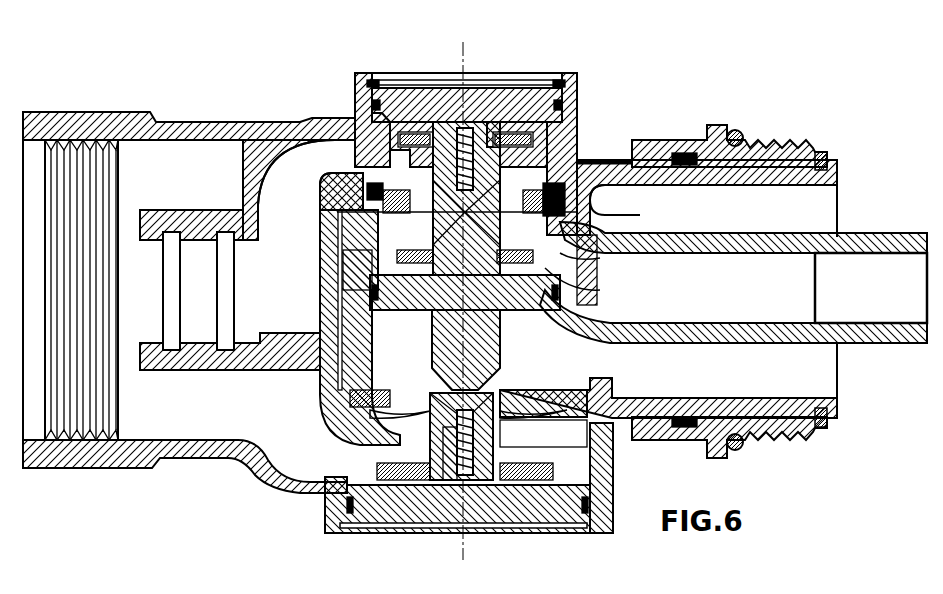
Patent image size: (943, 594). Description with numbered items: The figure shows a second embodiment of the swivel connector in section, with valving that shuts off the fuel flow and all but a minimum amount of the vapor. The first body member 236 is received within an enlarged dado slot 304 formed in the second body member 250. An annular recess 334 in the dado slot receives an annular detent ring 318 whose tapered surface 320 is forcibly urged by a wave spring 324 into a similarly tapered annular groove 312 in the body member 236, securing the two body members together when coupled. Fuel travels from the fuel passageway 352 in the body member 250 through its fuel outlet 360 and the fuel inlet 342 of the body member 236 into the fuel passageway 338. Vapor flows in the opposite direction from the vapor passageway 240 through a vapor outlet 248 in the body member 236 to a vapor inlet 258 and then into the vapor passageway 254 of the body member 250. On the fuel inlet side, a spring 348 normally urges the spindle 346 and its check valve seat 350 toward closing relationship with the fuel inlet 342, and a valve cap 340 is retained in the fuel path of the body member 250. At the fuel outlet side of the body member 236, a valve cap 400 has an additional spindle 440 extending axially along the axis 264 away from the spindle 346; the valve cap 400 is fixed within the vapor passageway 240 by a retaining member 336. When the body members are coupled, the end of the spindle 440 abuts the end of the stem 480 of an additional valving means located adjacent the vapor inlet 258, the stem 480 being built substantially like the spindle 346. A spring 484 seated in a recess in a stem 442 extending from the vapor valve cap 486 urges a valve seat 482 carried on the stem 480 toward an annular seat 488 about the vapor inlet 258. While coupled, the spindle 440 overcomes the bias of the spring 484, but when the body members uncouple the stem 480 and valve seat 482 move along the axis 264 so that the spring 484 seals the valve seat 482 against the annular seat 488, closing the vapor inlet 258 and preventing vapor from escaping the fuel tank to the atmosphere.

The second body member 250 is at (194, 100).
The fuel passageway 352 is at (297, 150).
The vapor passageway 254 is at (292, 458).
The spindle 346 is at (320, 228).
The check valve seat 350 is at (400, 245).
The annular recess 334 is at (363, 185).
The enlarged dado slot 304 is at (323, 195).
The wave spring 324 is at (378, 183).
The fuel inlet 342 is at (520, 185).
The valve cap 340 is at (503, 92).
The fuel outlet 360 is at (432, 177).
The retaining member 336 is at (555, 310).
The spring 348 is at (433, 323).
The spindle 440 is at (482, 340).
The stem 442 is at (478, 465).
The spring 484 is at (445, 470).
The stem 480 is at (433, 440).
The vapor outlet 248 is at (523, 397).
The vapor valve cap 486 is at (573, 530).
The vapor inlet 258 is at (614, 470).
The valve seat 482 is at (617, 495).
The annular seat 488 is at (617, 447).
The tapered annular groove 312 is at (707, 289).
The annular detent ring 318 is at (573, 207).
The first body member 236 is at (612, 153).
The vapor passageway 240 is at (770, 197).
The fuel passageway 338 is at (670, 260).
The tapered surface 320 is at (580, 240).
The valve cap 400 is at (587, 290).
The axis 264 is at (463, 47).